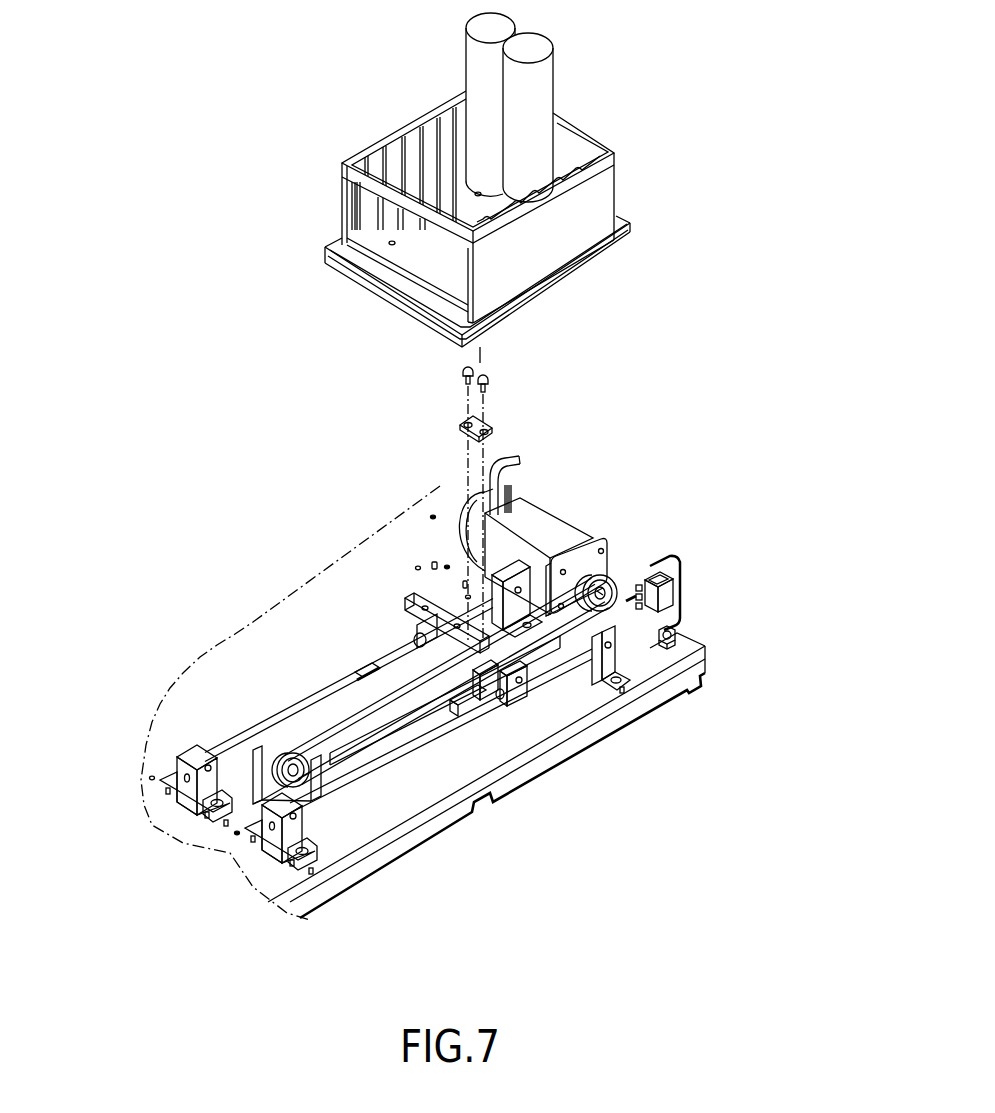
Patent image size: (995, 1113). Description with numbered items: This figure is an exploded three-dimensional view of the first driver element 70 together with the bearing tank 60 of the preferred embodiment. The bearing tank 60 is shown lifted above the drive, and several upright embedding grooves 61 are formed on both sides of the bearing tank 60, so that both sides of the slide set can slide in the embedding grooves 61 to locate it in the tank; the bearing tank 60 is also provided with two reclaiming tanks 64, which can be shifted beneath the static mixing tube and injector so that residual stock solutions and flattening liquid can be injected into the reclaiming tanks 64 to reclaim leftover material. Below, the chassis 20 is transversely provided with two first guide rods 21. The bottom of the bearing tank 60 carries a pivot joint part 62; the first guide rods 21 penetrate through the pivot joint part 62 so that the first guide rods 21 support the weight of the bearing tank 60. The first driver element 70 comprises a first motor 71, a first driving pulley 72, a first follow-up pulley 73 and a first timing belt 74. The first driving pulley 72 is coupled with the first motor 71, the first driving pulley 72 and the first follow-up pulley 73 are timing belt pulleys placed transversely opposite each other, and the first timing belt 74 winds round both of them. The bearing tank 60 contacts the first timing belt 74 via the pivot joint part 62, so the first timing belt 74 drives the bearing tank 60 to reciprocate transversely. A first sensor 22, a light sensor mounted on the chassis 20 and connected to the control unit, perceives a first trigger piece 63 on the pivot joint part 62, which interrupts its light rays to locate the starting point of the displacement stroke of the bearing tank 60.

The chassis 20 is at (350, 892).
The first guide rods 21 is at (285, 710).
The first sensor 22 is at (505, 690).
The bearing tank 60 is at (605, 193).
The embedding grooves 61 is at (375, 143).
The pivot joint part 62 is at (407, 607).
The first trigger piece 63 is at (503, 692).
The reclaiming tanks 64 is at (550, 78).
The first driver element 70 is at (464, 630).
The first motor 71 is at (542, 517).
The first driving pulley 72 is at (613, 587).
The first follow-up pulley 73 is at (220, 790).
The first timing belt 74 is at (407, 717).